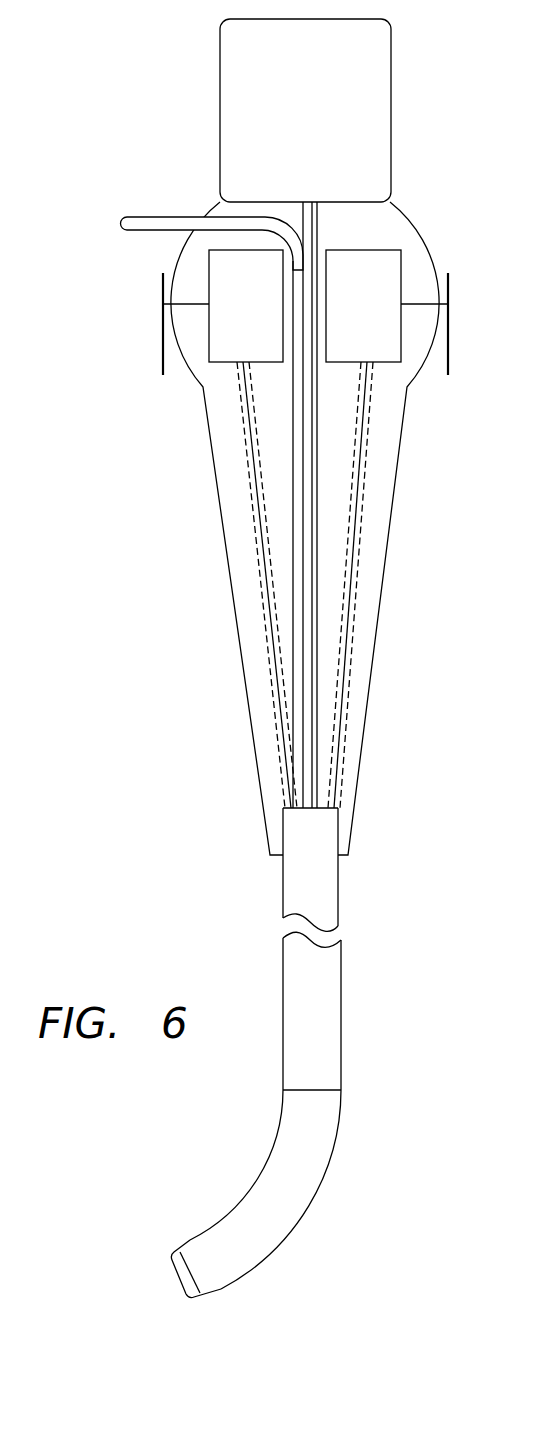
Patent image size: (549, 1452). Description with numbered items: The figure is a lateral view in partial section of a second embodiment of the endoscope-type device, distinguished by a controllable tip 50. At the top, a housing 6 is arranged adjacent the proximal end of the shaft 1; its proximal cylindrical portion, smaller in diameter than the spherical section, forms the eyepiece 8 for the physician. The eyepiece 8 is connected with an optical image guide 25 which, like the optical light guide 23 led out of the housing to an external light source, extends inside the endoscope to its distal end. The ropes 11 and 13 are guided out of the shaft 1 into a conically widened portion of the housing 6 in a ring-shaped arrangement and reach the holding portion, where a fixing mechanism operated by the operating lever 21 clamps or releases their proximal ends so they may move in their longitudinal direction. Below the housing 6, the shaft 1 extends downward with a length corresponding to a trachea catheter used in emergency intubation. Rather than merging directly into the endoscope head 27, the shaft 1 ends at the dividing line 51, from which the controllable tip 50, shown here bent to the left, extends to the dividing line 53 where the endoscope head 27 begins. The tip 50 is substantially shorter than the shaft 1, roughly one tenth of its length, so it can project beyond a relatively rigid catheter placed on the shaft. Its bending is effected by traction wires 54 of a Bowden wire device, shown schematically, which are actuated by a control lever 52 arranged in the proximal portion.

The shaft 1 is at (333, 1000).
The housing 6 is at (191, 447).
The eyepiece 8 is at (375, 122).
The rope 11 is at (412, 585).
The rope 13 is at (371, 478).
The operating lever 21 is at (466, 285).
The optical light guide 23 is at (150, 222).
The optical image guide 25 is at (305, 210).
The endoscope head 27 is at (217, 1296).
The controllable tip 50 is at (318, 1145).
The dividing line 51 is at (341, 1090).
The control lever 52 is at (146, 321).
The dividing line 53 is at (201, 1256).
The traction wires 54 is at (248, 553).